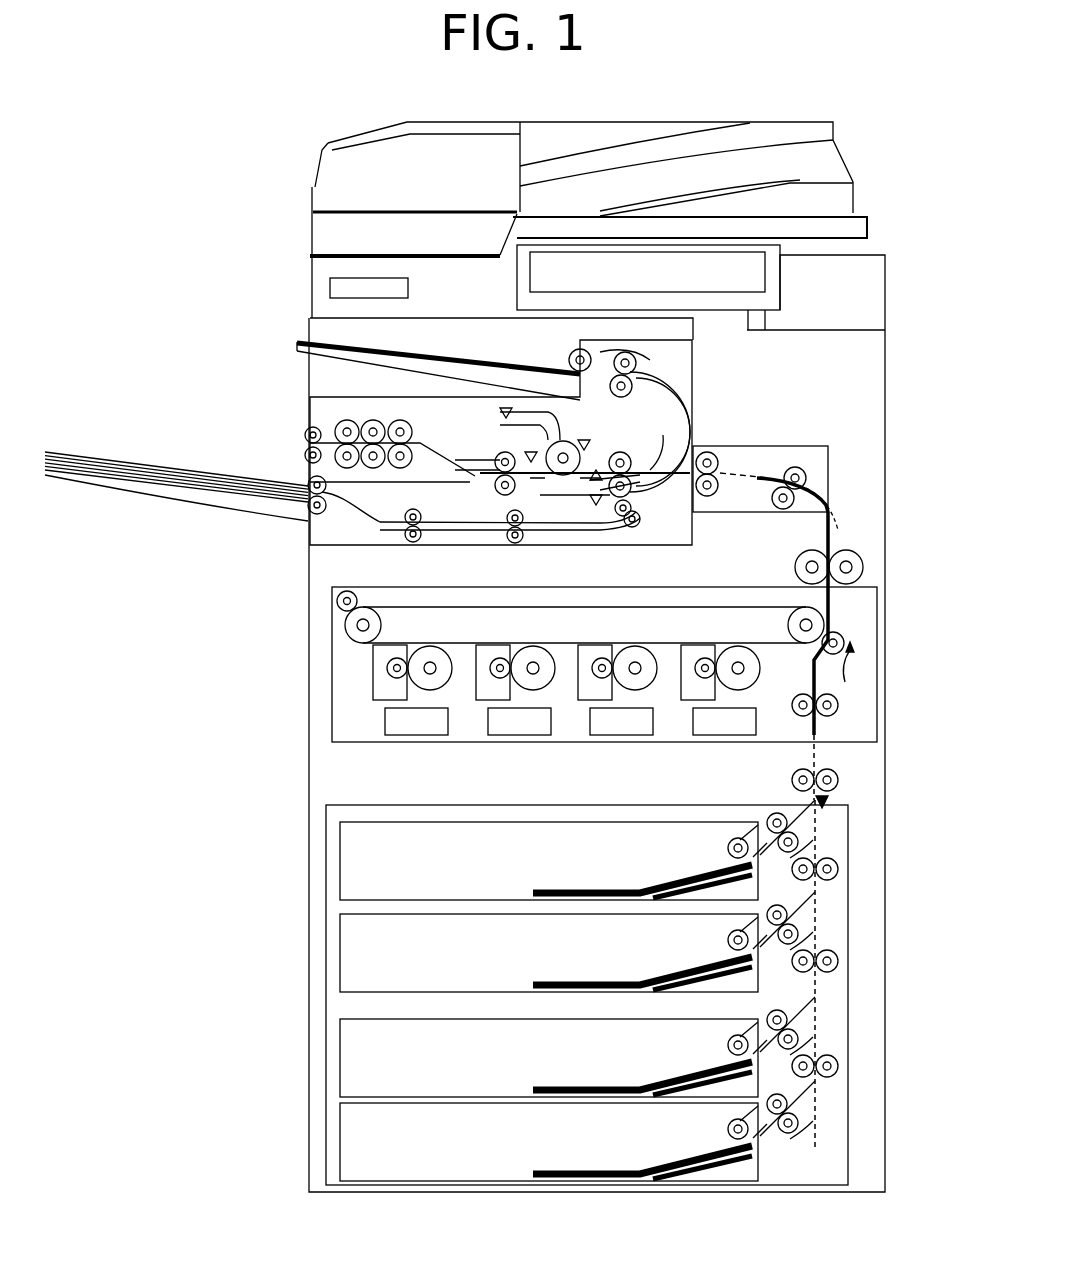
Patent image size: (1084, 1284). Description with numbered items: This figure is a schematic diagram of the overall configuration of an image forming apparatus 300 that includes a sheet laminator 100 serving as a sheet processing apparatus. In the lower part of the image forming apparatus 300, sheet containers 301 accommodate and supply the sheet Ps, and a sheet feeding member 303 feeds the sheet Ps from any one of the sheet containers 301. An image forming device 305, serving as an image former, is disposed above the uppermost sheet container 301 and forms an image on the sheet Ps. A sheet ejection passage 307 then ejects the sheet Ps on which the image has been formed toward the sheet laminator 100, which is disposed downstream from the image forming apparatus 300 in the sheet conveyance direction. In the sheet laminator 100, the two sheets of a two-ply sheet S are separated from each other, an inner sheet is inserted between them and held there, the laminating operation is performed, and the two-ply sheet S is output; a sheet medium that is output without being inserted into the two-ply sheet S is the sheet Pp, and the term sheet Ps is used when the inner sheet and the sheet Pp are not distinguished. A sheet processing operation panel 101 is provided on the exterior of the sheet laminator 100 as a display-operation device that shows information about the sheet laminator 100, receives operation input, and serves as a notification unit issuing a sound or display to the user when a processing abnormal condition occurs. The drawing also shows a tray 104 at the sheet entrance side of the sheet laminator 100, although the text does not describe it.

The image forming apparatus 300 is at (875, 140).
The sheet processing operation panel 101 is at (757, 281).
The sheet laminator 100 is at (270, 353).
The sheet tray 104 is at (157, 499).
The sheet ejection passage 307 is at (763, 446).
The image forming device 305 is at (615, 745).
The sheet feeding member 303 is at (732, 840).
The sheet containers 301 is at (695, 1183).
The two-ply sheet S is at (297, 331).
The sheet Pp is at (153, 463).
The sheet Ps is at (838, 543).